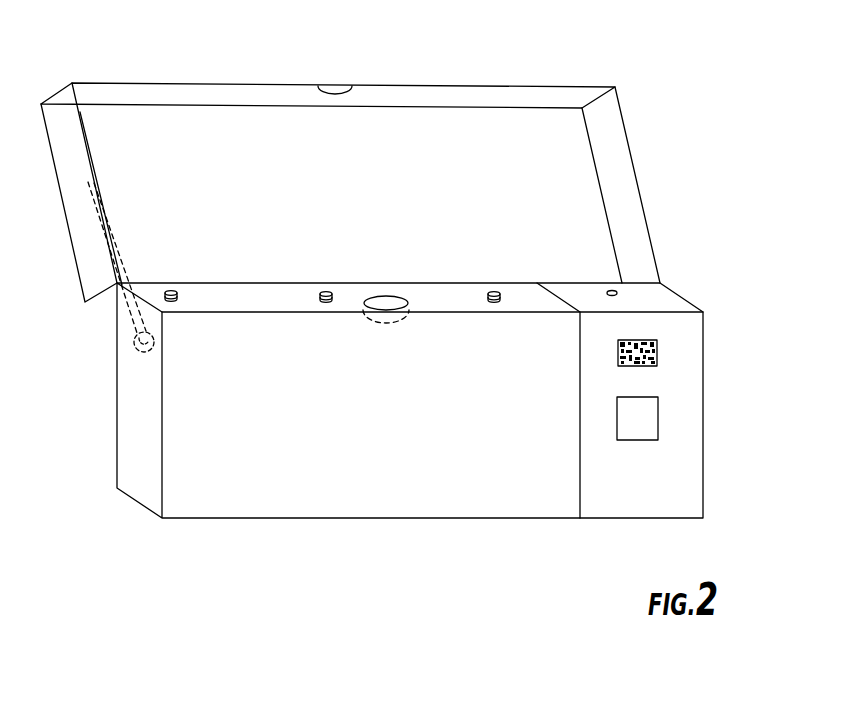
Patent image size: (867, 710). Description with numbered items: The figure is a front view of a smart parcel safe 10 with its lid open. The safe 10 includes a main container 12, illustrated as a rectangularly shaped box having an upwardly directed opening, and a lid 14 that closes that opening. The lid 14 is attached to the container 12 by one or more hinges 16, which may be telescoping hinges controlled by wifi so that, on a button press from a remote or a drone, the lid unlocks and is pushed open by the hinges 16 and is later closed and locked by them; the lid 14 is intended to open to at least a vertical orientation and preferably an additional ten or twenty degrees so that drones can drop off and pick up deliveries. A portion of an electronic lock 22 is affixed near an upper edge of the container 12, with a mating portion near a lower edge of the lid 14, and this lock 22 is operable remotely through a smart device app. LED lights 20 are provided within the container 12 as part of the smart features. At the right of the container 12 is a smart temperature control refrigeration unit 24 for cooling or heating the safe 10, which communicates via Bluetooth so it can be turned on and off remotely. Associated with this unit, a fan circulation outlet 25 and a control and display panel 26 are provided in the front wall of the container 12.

The smart parcel safe 10 is at (745, 96).
The main container 12 is at (695, 380).
The lid 14 is at (622, 195).
The hinge 16 is at (132, 354).
The LED lights 20 is at (493, 293).
The lock 22 is at (335, 86).
The smart temperature control refrigeration unit 24 is at (667, 298).
The fan circulation outlet 25 is at (658, 352).
The control and display panel 26 is at (652, 425).